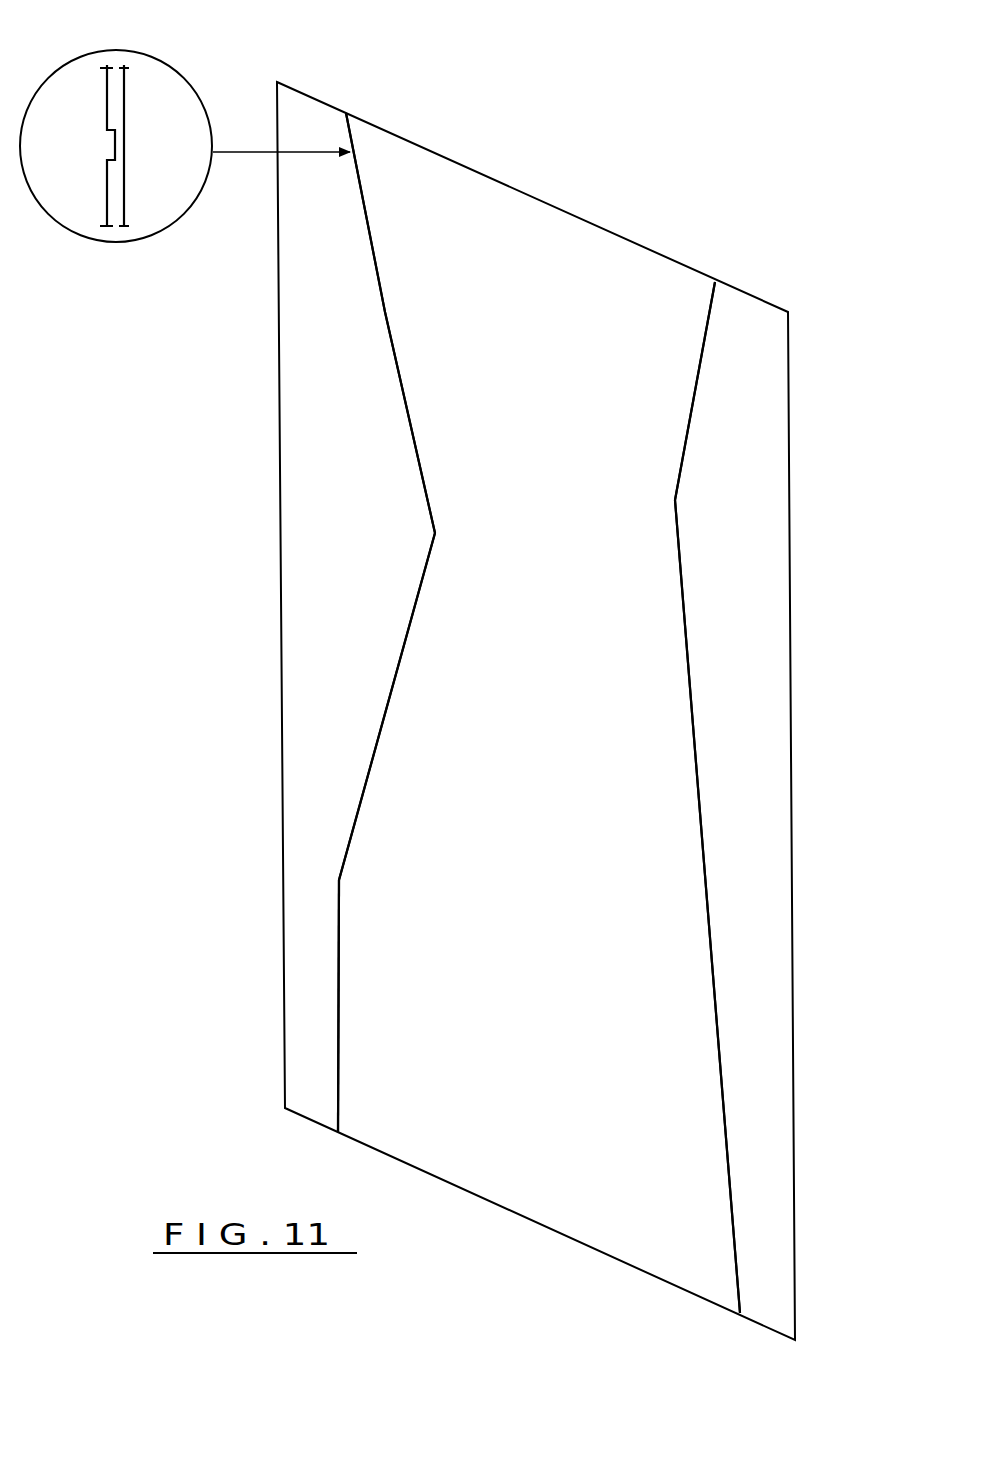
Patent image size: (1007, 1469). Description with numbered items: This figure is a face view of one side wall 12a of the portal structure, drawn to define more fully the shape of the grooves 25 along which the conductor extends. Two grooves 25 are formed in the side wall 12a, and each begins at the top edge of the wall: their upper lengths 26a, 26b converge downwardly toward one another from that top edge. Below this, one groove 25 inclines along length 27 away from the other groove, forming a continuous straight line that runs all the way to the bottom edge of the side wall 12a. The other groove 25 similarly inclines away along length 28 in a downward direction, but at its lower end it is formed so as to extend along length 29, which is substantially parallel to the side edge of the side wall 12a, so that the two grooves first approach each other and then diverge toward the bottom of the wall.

The side wall 12a is at (125, 87).
The grooves 25 is at (108, 148).
The length 26a is at (383, 312).
The length 26b is at (695, 412).
The length 27 is at (708, 896).
The length 28 is at (387, 708).
The length 29 is at (338, 952).